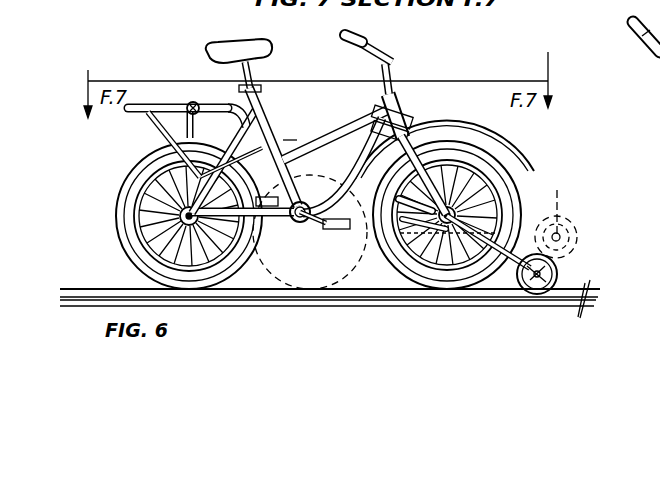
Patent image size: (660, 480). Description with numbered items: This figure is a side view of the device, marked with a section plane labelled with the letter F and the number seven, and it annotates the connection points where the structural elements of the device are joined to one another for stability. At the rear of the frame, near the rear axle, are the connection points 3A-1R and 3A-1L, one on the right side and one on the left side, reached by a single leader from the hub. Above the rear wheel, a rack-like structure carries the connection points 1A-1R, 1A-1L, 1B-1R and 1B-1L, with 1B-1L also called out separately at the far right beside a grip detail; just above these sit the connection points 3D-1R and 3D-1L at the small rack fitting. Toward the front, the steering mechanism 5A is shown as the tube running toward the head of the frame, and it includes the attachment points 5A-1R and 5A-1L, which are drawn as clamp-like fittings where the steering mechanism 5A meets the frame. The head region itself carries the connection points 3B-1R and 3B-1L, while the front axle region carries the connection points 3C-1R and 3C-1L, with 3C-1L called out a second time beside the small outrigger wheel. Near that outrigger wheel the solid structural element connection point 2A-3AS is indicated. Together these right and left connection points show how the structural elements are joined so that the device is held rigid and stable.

The connection point 3A-1R is at (388, 241).
The connection point 3A-1L is at (200, 226).
The connection point 3B-1R is at (476, 84).
The connection point 3B-1L is at (400, 97).
The connection point 3C-1R is at (529, 218).
The connection point 3C-1L is at (488, 193).
The connection point 3D-1R is at (140, 60).
The connection point 3D-1L is at (193, 103).
The steering mechanism 5A is at (357, 122).
The attachment point 5A-1R is at (481, 123).
The attachment point 5A-1L is at (408, 128).
The connection point 1A-1R is at (160, 109).
The connection point 1A-1L is at (160, 109).
The connection point 1B-1R is at (184, 105).
The connection point 1B-1L is at (659, 80).
The structural element connection point 2A-3AS is at (597, 219).